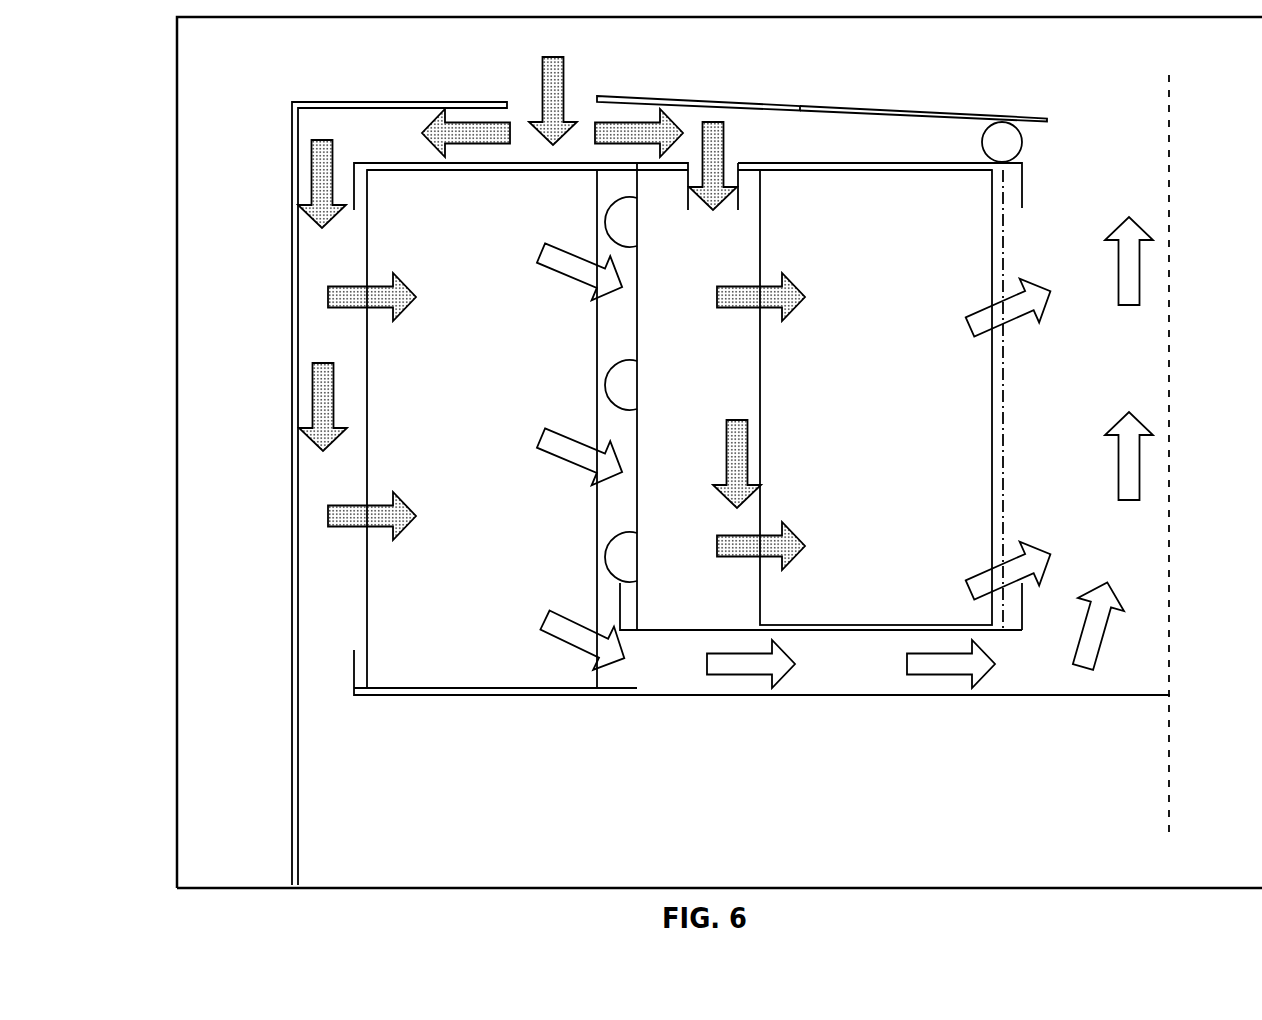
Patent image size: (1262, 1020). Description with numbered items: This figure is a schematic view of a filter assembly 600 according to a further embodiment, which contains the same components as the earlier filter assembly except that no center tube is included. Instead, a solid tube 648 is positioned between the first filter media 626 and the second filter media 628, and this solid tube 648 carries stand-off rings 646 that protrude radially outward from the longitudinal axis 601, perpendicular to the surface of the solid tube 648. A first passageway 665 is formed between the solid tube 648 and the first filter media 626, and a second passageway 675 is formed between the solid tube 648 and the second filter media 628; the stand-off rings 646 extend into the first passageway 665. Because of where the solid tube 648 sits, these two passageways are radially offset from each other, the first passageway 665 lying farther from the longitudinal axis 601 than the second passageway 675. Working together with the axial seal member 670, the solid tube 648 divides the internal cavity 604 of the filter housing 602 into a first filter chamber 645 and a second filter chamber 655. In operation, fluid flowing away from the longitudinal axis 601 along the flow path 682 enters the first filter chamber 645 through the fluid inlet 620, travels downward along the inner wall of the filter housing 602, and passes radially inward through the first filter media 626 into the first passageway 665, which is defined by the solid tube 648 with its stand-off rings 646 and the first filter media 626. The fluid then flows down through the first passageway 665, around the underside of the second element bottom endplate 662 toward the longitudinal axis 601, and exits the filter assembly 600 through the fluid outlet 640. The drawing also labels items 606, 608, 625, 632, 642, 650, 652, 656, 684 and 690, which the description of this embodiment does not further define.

The filter assembly 600 is at (152, 96).
The longitudinal axis 601 is at (1172, 238).
The filter housing 602 is at (290, 342).
The internal cavity 604 is at (310, 466).
The first filter media 606 is at (370, 243).
The second filter media 608 is at (810, 187).
The fluid inlet 620 is at (596, 95).
The annular gap flow 625 is at (607, 628).
The first filter media 626 is at (397, 572).
The second filter media 628 is at (903, 598).
The first endplate 632 is at (366, 157).
The fluid outlet 640 is at (1047, 119).
The bottom endplate 642 is at (473, 697).
The first filter chamber 645 is at (693, 128).
The stand-off rings 646 is at (622, 562).
The solid tube 648 is at (707, 632).
The nutplate 650 is at (927, 110).
The upper endplate 652 is at (960, 160).
The second filter chamber 655 is at (1148, 673).
The center tube 656 is at (1003, 540).
The second element bottom endplate 662 is at (638, 612).
The first passageway 665 is at (627, 660).
The axial seal member 670 is at (1008, 133).
The second passageway 675 is at (734, 155).
The flow path 682 is at (430, 125).
The inlet flow arrow 684 is at (642, 124).
The outlet flow 690 is at (1125, 375).